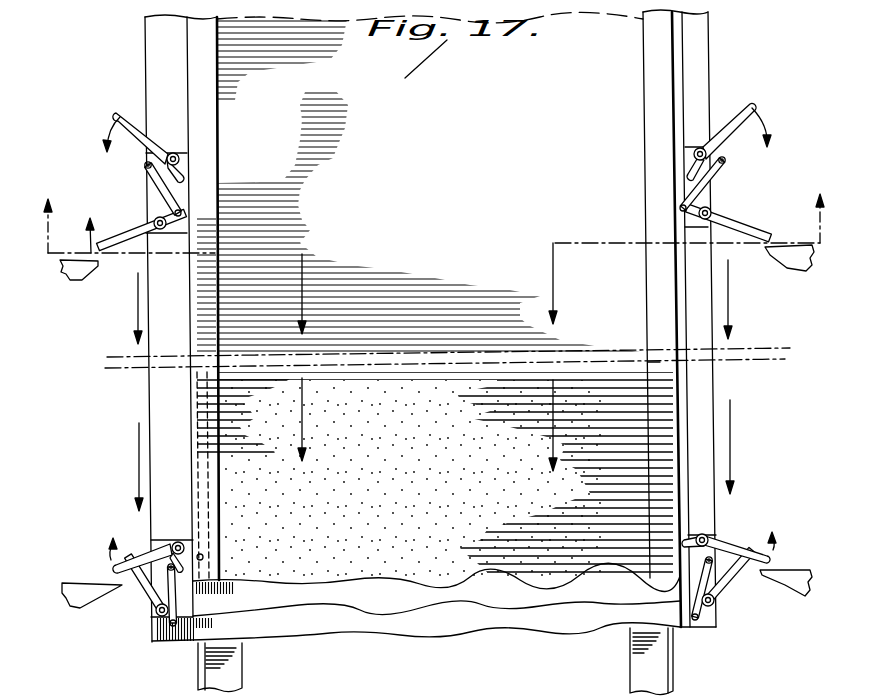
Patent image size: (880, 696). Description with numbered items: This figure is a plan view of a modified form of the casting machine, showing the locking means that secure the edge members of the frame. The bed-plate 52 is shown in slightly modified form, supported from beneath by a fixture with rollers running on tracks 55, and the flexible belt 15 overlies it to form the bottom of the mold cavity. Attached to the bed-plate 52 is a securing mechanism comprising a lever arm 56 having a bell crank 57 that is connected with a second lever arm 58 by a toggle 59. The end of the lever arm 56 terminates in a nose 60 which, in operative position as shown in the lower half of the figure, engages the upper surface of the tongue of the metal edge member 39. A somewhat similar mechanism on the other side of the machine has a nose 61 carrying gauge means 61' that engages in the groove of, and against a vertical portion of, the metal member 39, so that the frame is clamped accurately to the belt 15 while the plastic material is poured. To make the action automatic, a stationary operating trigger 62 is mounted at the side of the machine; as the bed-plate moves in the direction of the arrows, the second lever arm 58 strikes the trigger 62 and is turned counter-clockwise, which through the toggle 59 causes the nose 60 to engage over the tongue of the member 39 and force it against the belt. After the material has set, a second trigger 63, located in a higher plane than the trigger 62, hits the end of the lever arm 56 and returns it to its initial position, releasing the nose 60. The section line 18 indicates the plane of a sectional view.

The flexible belt 15 is at (540, 645).
The section line 18- 18 is at (436, 208).
The metal edge member 39 is at (207, 222).
The bed-plate 52 is at (442, 628).
The track 55 is at (242, 660).
The lever arm 56 is at (116, 115).
The bell crank 57 is at (150, 181).
The second lever arm 58 is at (122, 240).
The toggle 59 is at (157, 200).
The nose 60 is at (694, 166).
The nose 61 is at (221, 362).
The gauge means 61' is at (211, 344).
The operating trigger 62 is at (90, 274).
The second trigger 63 is at (85, 602).